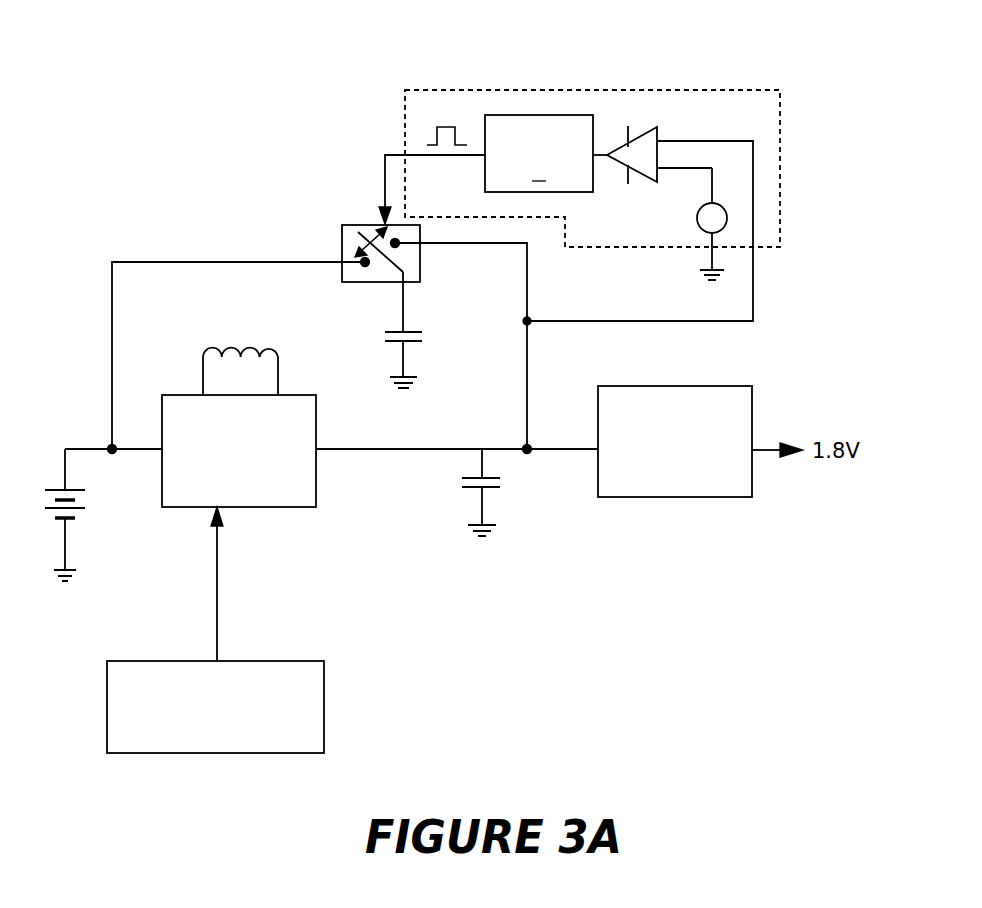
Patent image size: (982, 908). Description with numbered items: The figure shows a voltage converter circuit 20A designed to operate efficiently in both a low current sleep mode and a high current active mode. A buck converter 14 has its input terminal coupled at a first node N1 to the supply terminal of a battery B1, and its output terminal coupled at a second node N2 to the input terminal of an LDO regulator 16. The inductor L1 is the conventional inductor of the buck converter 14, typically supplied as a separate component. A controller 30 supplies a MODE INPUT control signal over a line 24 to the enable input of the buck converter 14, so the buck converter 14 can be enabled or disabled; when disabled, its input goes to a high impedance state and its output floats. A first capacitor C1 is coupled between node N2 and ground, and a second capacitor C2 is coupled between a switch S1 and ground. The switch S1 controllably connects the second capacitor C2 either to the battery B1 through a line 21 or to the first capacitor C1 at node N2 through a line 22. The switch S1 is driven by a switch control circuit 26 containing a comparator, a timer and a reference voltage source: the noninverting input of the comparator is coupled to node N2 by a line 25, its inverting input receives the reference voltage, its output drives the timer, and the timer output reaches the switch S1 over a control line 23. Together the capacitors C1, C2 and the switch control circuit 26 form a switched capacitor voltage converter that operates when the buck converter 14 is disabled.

The voltage converter circuit 20A is at (254, 99).
The buck converter 14 is at (226, 476).
The LDO regulator 16 is at (662, 466).
The line 21 is at (187, 260).
The line 22 is at (466, 248).
The control line 23 is at (383, 167).
The line 24 is at (218, 565).
The line 25 is at (753, 282).
The switch control circuit 26 is at (780, 157).
The controller 30 is at (203, 731).
The switch S1 is at (367, 225).
The first node N1 is at (112, 447).
The second node N2 is at (527, 449).
The inductor L1 is at (240, 359).
The first capacitor C1 is at (501, 492).
The second capacitor C2 is at (421, 330).
The battery B1 is at (47, 515).